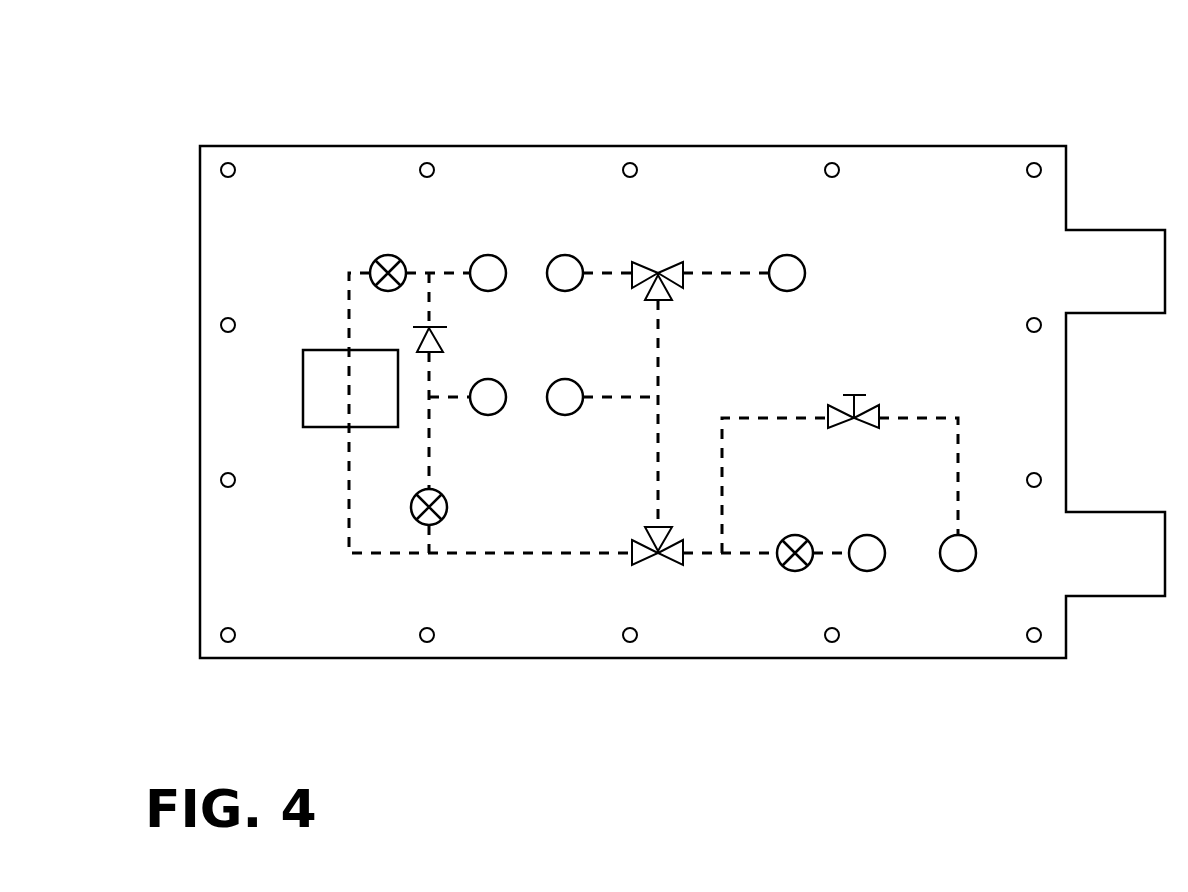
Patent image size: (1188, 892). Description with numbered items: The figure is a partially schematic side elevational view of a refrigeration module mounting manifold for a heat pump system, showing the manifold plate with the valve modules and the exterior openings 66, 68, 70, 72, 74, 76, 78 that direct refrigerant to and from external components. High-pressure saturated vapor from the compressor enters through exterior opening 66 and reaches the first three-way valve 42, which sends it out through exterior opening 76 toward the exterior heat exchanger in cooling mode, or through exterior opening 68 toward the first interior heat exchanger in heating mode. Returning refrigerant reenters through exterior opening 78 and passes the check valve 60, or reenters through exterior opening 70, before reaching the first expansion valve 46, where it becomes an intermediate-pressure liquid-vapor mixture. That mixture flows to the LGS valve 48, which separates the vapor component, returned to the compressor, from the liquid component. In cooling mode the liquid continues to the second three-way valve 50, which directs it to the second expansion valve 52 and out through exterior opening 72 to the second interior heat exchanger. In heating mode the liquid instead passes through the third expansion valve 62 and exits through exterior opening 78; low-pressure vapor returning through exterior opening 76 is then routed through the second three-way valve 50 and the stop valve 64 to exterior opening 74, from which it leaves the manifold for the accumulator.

The first three-way valve 42 is at (658, 262).
The first expansion valve 46 is at (388, 255).
The LGS valve 48 is at (303, 394).
The second three-way valve 50 is at (658, 565).
The second expansion valve 52 is at (795, 571).
The check valve 60 is at (415, 328).
The third expansion valve 62 is at (414, 516).
The stop valve 64 is at (858, 414).
The exterior opening 66 is at (790, 255).
The exterior opening 68 is at (565, 255).
The exterior opening 70 is at (488, 255).
The exterior opening 72 is at (868, 571).
The exterior opening 74 is at (958, 571).
The exterior opening 76 is at (560, 415).
The exterior opening 78 is at (485, 415).